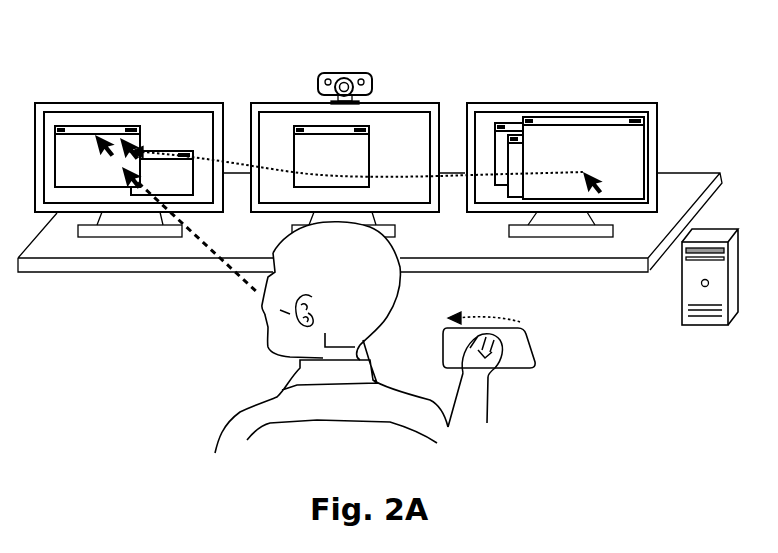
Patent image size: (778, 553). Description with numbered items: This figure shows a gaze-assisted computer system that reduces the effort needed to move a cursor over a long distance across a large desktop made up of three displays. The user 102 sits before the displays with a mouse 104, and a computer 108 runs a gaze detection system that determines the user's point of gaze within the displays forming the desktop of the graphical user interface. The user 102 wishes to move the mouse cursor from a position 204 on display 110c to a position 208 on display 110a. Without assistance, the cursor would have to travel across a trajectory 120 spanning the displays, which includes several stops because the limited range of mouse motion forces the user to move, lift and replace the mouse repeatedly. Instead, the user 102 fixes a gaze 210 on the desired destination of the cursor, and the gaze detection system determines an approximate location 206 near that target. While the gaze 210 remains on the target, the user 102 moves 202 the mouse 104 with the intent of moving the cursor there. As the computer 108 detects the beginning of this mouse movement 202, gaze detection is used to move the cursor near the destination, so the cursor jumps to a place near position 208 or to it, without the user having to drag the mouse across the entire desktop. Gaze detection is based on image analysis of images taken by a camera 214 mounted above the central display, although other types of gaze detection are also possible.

The user 102 is at (242, 453).
The mouse 104 is at (527, 346).
The computer 108 is at (713, 326).
The display 110a is at (190, 118).
The display 110c is at (484, 118).
The trajectory 120 is at (234, 178).
The mouse movement 202 is at (531, 322).
The position 204 is at (583, 170).
The approximate location 206 is at (123, 134).
The position 208 is at (95, 134).
The gaze 210 is at (240, 282).
The camera 214 is at (355, 76).